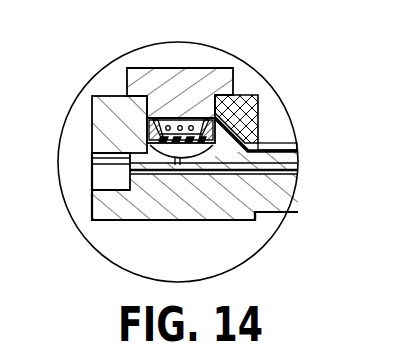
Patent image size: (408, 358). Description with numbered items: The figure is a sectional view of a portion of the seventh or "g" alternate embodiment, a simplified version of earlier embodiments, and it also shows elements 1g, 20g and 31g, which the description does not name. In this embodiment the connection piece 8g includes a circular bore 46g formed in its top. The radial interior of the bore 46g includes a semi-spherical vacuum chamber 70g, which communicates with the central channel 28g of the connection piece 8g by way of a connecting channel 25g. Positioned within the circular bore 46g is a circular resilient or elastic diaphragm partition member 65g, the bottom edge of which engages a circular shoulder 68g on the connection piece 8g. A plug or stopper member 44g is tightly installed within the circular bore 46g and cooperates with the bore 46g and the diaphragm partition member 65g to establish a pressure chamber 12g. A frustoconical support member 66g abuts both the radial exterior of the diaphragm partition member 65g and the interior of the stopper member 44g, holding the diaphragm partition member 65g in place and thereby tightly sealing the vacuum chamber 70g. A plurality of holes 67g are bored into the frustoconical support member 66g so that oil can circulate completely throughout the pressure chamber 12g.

The stopper member 44g is at (175, 78).
The pressure chamber 12g is at (160, 118).
The holes 67g is at (214, 118).
The frustoconical support member 66g is at (236, 97).
The diaphragm partition member 65g is at (265, 116).
The plate 31g is at (288, 146).
The central channel 28g is at (285, 172).
The housing 1g is at (266, 224).
The connection piece 8g is at (236, 200).
The connecting channel 25g is at (178, 166).
The circular bore 46g is at (147, 122).
The circular shoulder 68g is at (100, 157).
The vacuum chamber 70g is at (97, 165).
The terminal 20g is at (105, 190).